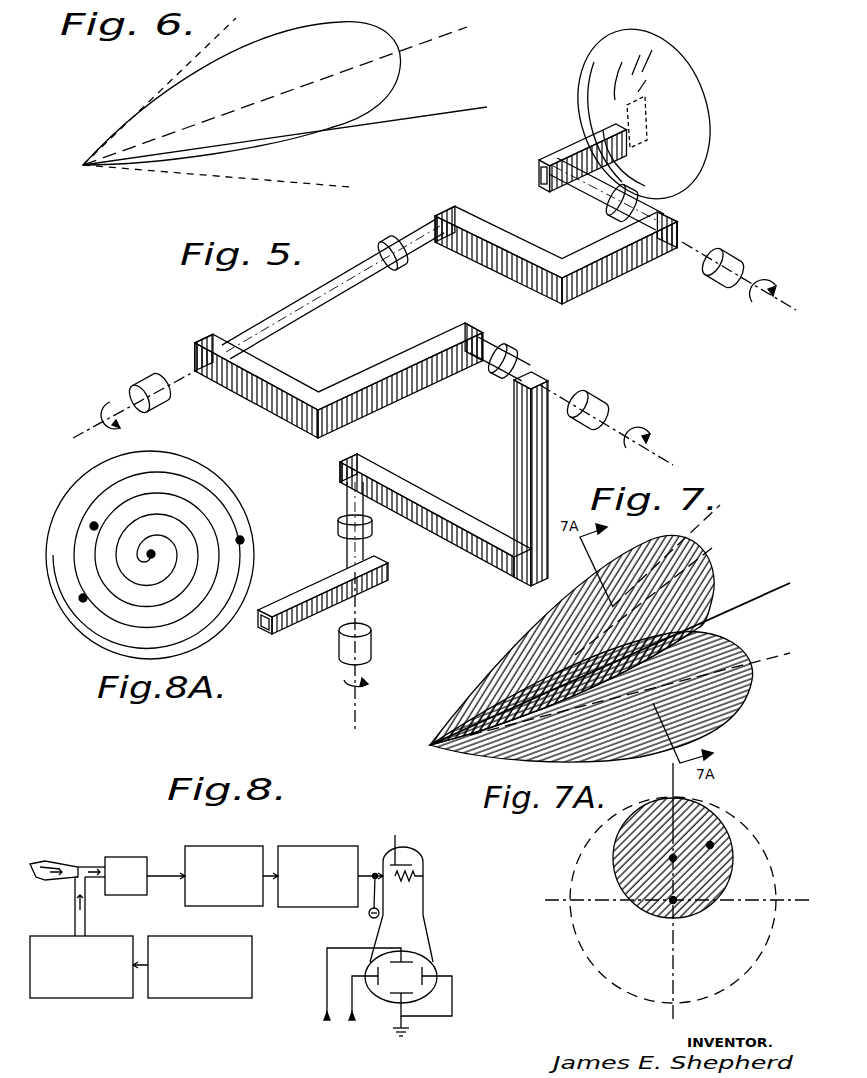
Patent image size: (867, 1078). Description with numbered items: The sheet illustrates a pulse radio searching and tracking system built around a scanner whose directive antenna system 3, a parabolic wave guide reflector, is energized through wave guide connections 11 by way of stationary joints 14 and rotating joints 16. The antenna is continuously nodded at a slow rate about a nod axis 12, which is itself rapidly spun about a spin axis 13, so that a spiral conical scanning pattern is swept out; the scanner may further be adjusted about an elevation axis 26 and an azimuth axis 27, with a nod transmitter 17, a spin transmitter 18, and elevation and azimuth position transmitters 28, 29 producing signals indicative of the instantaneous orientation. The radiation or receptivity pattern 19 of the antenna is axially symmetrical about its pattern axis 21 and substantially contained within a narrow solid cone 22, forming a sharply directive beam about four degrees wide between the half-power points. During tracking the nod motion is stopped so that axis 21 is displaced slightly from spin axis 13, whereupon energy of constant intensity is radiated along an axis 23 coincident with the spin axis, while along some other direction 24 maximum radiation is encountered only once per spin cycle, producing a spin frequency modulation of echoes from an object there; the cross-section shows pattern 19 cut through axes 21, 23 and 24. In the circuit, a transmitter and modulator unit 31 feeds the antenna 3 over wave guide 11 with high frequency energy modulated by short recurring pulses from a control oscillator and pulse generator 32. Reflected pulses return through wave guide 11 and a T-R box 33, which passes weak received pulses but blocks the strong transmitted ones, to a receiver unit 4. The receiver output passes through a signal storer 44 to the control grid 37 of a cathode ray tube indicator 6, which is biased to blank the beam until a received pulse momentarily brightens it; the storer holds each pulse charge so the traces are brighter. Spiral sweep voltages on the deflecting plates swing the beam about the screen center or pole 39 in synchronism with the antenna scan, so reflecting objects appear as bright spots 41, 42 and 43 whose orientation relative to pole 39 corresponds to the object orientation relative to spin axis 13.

In FIG. 5, the directive antenna system 3 is at (706, 146).
In FIG. 8, the receiver unit 4 is at (240, 846).
In FIG. 8, the cathode ray tube indicator 6 is at (438, 928).
In FIG. 5, the wave guide connection 11 is at (584, 135).
In FIG. 8, the wave guide connection 11 is at (70, 866).
In FIG. 5, the nod axis 12 is at (794, 312).
In FIG. 5, the spin axis 13 is at (186, 384).
In FIG. 5, the stationary joint 14 is at (551, 188).
In FIG. 5, the rotating joint 16 is at (382, 250).
In FIG. 5, the nod transmitter 17 is at (736, 256).
In FIG. 5, the spin transmitter 18 is at (141, 380).
In FIG. 6, the radiation pattern 19 is at (384, 50).
In FIG. 7, the radiation pattern 19 is at (650, 542).
In FIG. 7A, the radiation pattern 19 is at (614, 835).
In FIG. 6, the pattern axis 21 is at (426, 43).
In FIG. 7, the pattern axis 21 is at (726, 545).
In FIG. 7A, the pattern axis 21 is at (671, 859).
In FIG. 6, the solid cone 22 is at (258, 18).
In FIG. 6, the axis coincident with spin axis 23 is at (417, 113).
In FIG. 7, the axis coincident with spin axis 23 is at (790, 585).
In FIG. 7A, the axis coincident with spin axis 23 is at (671, 902).
In FIG. 7, the off-axis direction 24 is at (725, 506).
In FIG. 7A, the off-axis direction 24 is at (712, 845).
In FIG. 5, the elevation axis 26 is at (676, 461).
In FIG. 5, the azimuth axis 27 is at (362, 606).
In FIG. 5, the elevation position transmitter 28 is at (601, 403).
In FIG. 5, the azimuth position transmitter 29 is at (373, 647).
In FIG. 8, the transmitter and modulator unit 31 is at (72, 1000).
In FIG. 8, the control oscillator and pulse generator 32 is at (203, 1000).
In FIG. 8, the T-R box 33 is at (129, 857).
In FIG. 8, the control grid 37 is at (420, 880).
In FIG. 8A, the screen center or pole 39 is at (154, 551).
In FIG. 8A, the bright spot 41 is at (242, 538).
In FIG. 8A, the bright spot 42 is at (94, 526).
In FIG. 8A, the bright spot 43 is at (81, 600).
In FIG. 8, the bright spot 43 is at (366, 910).
In FIG. 8, the signal storer 44 is at (331, 838).